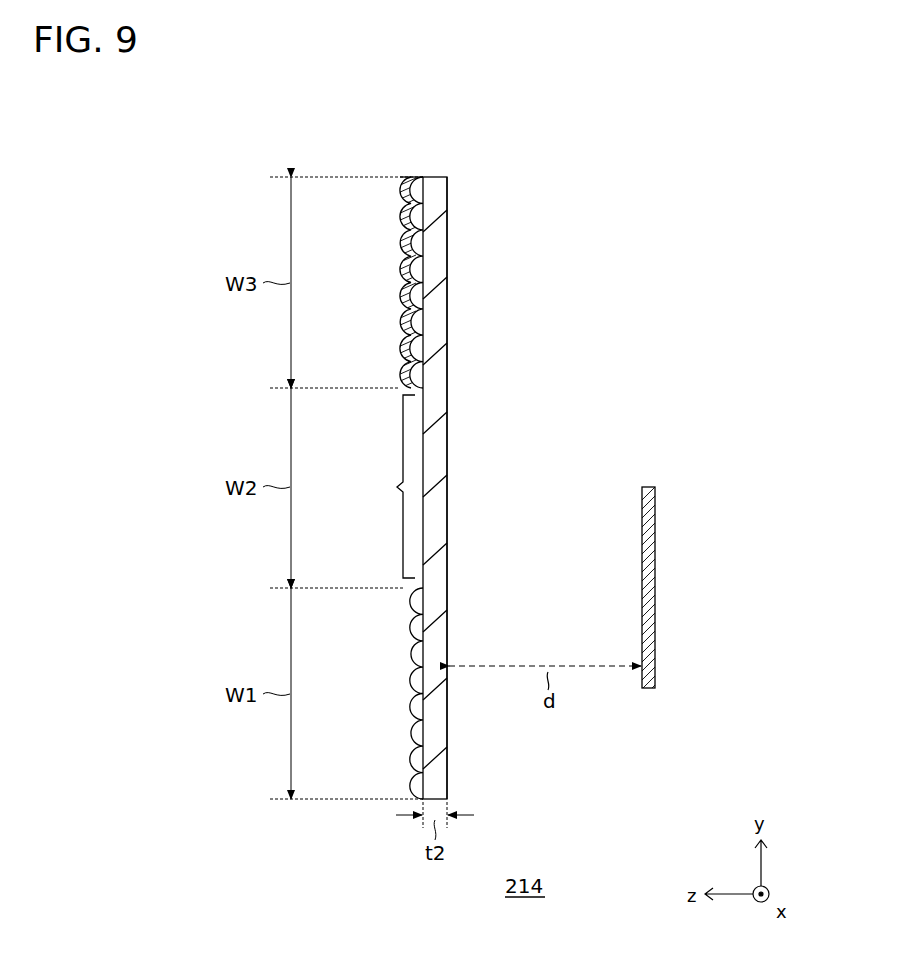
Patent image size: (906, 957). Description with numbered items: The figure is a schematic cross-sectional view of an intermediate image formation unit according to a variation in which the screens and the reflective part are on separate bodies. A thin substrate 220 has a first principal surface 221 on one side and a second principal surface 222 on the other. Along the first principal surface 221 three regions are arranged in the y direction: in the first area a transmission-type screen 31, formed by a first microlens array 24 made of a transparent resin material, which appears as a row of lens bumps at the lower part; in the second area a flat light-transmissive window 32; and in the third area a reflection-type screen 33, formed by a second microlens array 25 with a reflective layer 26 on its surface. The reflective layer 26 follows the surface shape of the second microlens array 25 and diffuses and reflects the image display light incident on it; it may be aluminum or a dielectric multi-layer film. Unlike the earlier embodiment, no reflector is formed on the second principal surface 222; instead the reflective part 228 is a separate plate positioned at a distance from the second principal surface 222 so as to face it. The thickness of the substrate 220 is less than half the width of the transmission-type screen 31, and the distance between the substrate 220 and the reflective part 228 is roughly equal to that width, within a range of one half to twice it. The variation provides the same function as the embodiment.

The substrate 220 is at (448, 193).
The first principal surface 221 is at (409, 179).
The second principal surface 222 is at (448, 253).
The reflective part 228 is at (656, 588).
The reflection-type screen 33 is at (371, 283).
The reflective layer 26 is at (404, 306).
The second microlens array 25 is at (405, 347).
The light-transmissive window 32 is at (396, 487).
The transmission-type screen 31 is at (371, 693).
The first microlens array 24 is at (410, 652).